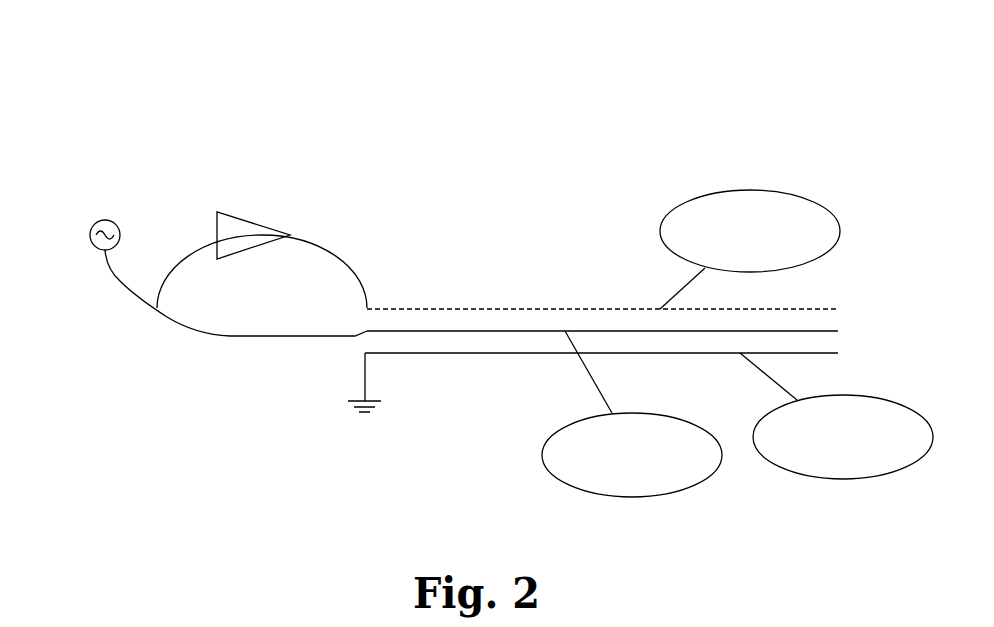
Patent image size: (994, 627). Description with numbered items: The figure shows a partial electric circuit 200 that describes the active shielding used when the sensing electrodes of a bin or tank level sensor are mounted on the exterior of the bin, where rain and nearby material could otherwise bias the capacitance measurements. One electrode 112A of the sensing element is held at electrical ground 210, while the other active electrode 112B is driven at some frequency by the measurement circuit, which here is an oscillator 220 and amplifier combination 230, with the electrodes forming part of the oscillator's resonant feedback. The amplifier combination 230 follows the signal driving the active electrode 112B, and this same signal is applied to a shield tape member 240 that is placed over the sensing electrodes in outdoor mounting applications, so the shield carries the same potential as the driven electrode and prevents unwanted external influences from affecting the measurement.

The partial electric circuit 200 is at (211, 62).
The electrical ground 210 is at (363, 414).
The oscillator 220 is at (100, 251).
The amplifier combination 230 is at (255, 248).
The shield tape member 240 is at (785, 190).
The electrode 112A is at (878, 477).
The active electrode 112B is at (666, 497).